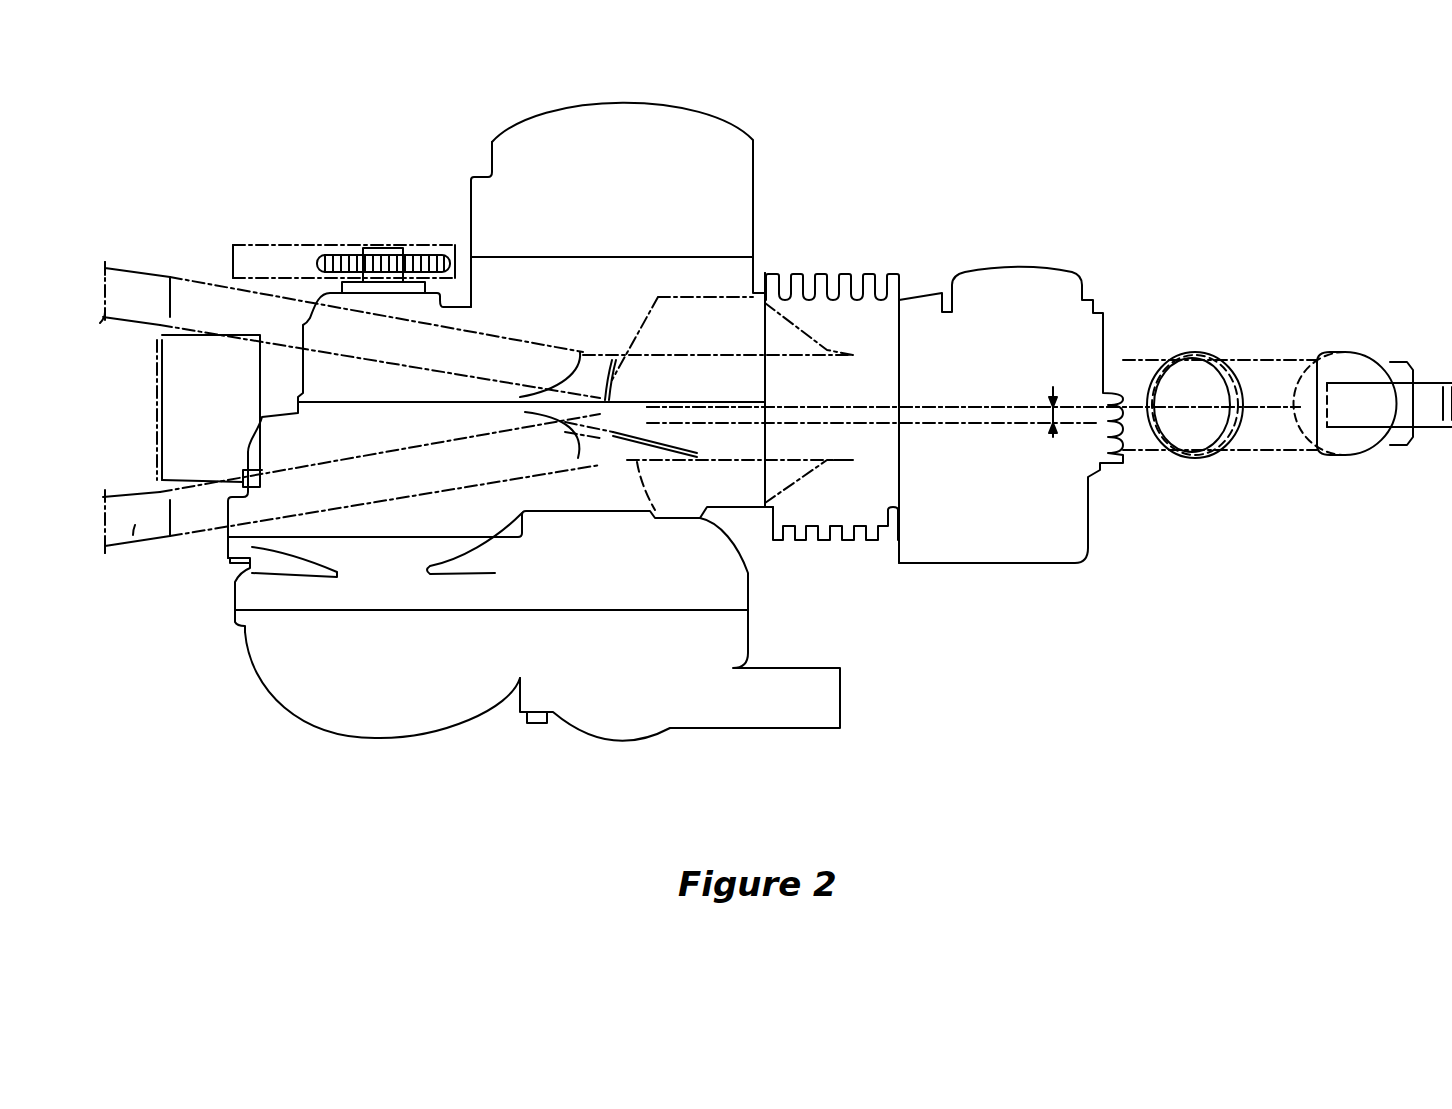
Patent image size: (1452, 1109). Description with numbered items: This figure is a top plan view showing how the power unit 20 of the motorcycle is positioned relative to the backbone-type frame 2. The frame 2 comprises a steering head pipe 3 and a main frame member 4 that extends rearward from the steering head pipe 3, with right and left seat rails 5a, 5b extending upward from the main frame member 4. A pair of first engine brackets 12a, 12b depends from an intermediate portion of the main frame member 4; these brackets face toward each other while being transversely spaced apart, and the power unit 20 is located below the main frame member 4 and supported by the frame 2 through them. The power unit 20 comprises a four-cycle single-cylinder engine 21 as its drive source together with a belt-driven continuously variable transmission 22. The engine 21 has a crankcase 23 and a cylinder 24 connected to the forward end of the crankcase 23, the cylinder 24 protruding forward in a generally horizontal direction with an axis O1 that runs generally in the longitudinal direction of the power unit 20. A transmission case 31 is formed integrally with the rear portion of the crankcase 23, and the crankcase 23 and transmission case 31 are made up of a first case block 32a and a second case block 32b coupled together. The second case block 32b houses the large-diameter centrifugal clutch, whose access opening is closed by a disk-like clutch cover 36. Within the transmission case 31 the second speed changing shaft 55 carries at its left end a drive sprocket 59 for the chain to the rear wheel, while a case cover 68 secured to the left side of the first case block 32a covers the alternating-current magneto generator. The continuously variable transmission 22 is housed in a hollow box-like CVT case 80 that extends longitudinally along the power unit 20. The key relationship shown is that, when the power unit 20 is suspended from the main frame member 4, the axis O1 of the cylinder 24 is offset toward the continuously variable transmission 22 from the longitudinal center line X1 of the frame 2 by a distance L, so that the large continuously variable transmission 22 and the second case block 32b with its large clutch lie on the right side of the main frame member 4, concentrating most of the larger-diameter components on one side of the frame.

The frame 2 is at (1139, 352).
The steering head pipe 3 is at (1267, 437).
The main frame member 4 is at (947, 442).
The right seat rail 5a is at (146, 285).
The left seat rail 5b is at (133, 540).
The first engine bracket 12a is at (700, 313).
The first engine bracket 12b is at (680, 487).
The power unit 20 is at (966, 220).
The engine 21 is at (946, 562).
The continuously variable transmission 22 is at (460, 722).
The crankcase 23 is at (747, 273).
The cylinder 24 is at (836, 510).
The transmission case 31 is at (387, 523).
The first case block 32a is at (320, 375).
The second case block 32b is at (320, 428).
The clutch cover 36 is at (458, 550).
The second speed changing shaft 55 is at (381, 247).
The drive sprocket 59 is at (427, 260).
The case cover 68 is at (628, 140).
The CVT case 80 is at (312, 703).
The longitudinal center line X1 is at (970, 407).
The axis of the cylinder O1 is at (997, 423).
The distance L is at (1060, 413).